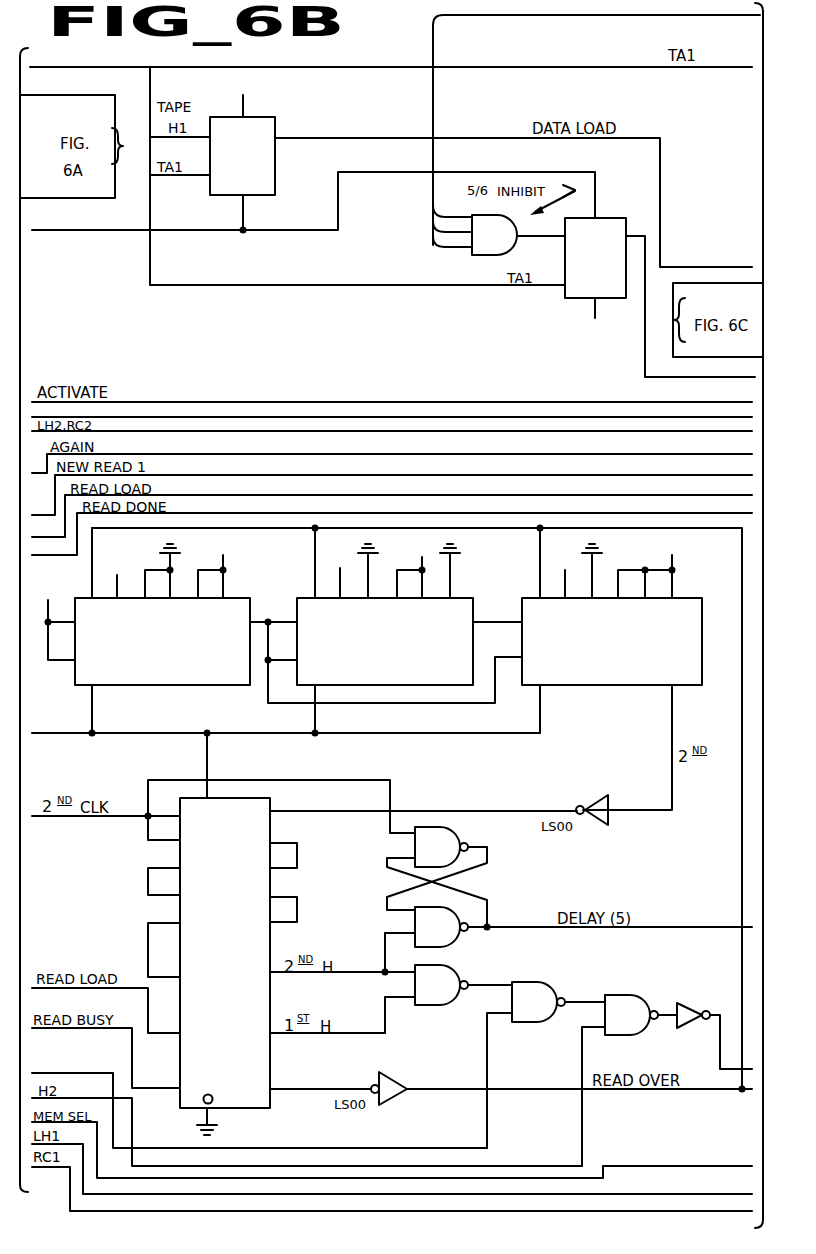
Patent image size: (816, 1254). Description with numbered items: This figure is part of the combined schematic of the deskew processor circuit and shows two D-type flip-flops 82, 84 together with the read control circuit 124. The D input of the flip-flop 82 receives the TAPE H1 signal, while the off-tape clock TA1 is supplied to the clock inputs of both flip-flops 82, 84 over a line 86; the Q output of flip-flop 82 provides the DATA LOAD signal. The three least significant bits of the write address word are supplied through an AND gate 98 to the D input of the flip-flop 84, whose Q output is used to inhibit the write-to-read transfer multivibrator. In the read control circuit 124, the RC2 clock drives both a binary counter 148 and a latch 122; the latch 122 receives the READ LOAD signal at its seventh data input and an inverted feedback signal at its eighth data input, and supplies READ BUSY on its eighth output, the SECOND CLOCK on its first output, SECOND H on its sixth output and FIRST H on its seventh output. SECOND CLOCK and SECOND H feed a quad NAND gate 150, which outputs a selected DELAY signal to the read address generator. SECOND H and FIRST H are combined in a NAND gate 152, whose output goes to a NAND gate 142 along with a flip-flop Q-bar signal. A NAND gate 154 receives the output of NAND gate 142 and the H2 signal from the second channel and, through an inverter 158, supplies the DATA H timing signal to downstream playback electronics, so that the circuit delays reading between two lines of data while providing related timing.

The D-type flip-flop 82 is at (266, 116).
The D-type flip-flop 84 is at (575, 300).
The line 86 is at (150, 213).
The AND gate 98 is at (485, 256).
The binary counter 148 is at (240, 597).
The read control circuit 124 is at (398, 750).
The latch 122 is at (180, 910).
The quad NAND gate 150 is at (482, 880).
The NAND gate 152 is at (454, 966).
The NAND gate 142 is at (541, 981).
The NAND gate 154 is at (627, 995).
The inverter 158 is at (688, 1003).